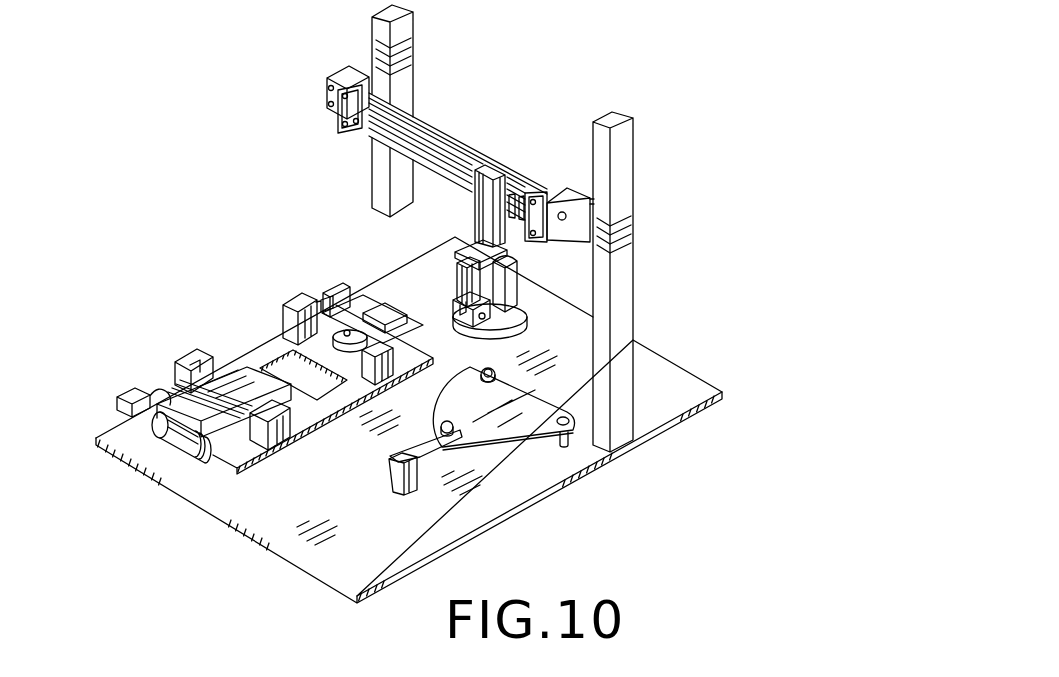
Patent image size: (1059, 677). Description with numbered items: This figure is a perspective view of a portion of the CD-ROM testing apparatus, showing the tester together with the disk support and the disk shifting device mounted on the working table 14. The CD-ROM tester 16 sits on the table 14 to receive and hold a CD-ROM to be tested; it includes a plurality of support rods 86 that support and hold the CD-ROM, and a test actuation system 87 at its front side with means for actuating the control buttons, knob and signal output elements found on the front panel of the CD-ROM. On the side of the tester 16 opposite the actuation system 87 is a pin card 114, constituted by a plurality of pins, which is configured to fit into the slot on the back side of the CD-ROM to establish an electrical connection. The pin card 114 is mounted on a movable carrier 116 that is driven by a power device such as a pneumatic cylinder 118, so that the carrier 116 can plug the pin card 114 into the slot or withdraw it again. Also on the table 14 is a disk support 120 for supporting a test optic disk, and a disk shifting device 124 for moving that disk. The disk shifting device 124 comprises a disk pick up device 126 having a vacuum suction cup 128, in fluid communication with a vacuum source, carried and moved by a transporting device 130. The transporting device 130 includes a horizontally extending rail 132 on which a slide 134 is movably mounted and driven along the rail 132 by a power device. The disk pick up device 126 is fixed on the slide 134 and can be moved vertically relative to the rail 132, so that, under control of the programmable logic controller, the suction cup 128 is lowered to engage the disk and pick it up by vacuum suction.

The working table 14 is at (681, 397).
The CD-ROM tester 16 is at (160, 450).
The support rods 86 is at (280, 433).
The test actuation system 87 is at (312, 275).
The pin card 114 is at (222, 392).
The movable carrier 116 is at (251, 374).
The pneumatic cylinder 118 is at (128, 394).
The disk support 120 is at (507, 427).
The disk shifting device 124 is at (524, 247).
The disk pick up device 126 is at (443, 268).
The vacuum suction cup 128 is at (507, 317).
The transporting device 130 is at (462, 120).
The rail 132 is at (414, 117).
The slide 134 is at (480, 207).